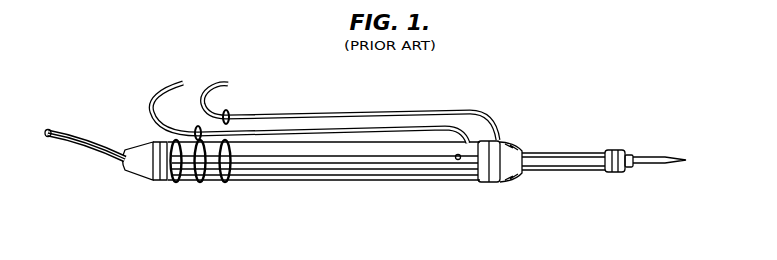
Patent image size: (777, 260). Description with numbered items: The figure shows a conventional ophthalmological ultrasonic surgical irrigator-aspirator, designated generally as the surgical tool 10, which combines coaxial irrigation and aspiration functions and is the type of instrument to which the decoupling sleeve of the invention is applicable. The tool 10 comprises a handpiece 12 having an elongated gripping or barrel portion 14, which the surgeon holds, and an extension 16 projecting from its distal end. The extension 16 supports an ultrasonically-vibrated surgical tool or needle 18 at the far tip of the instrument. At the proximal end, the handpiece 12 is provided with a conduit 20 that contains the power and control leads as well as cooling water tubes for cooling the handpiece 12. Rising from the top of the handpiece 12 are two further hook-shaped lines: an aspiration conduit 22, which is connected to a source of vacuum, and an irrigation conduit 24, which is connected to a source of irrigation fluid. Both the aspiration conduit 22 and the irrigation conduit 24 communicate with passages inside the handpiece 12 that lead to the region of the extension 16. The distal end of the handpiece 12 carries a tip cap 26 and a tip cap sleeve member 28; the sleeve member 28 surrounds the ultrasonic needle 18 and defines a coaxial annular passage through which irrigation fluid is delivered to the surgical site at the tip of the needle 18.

The surgical tool 10 is at (492, 98).
The handpiece 12 is at (250, 190).
The barrel portion 14 is at (352, 157).
The extension 16 is at (557, 168).
The needle 18 is at (657, 156).
The conduit 20 is at (88, 148).
The aspiration conduit 22 is at (165, 88).
The irrigation conduit 24 is at (233, 95).
The tip cap 26 is at (615, 150).
The tip cap sleeve member 28 is at (629, 168).